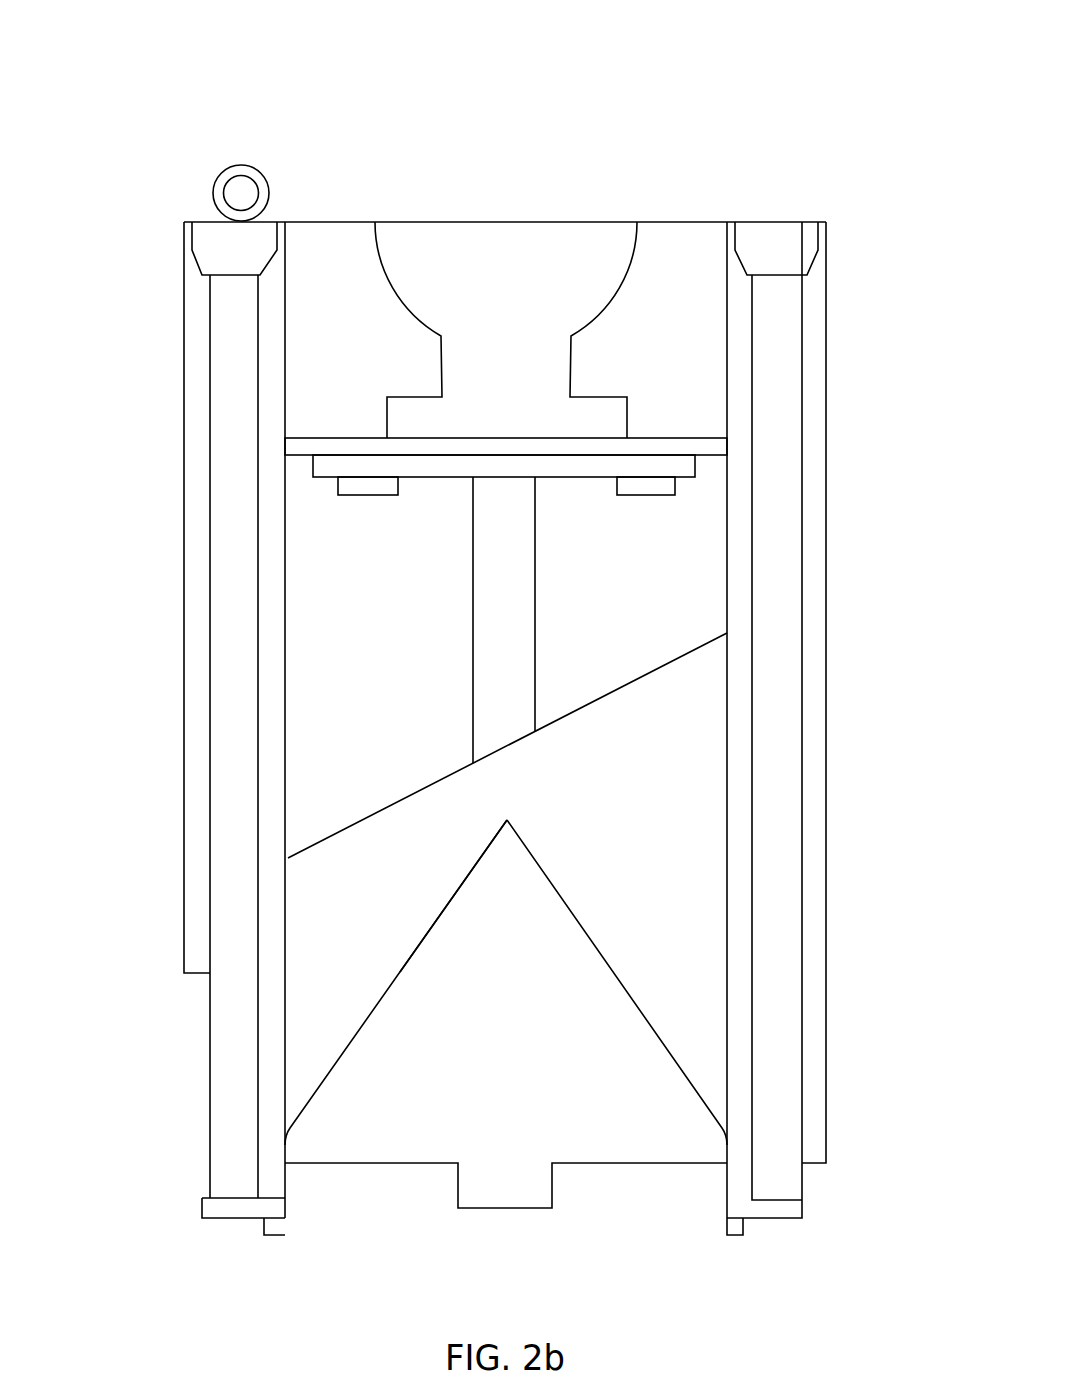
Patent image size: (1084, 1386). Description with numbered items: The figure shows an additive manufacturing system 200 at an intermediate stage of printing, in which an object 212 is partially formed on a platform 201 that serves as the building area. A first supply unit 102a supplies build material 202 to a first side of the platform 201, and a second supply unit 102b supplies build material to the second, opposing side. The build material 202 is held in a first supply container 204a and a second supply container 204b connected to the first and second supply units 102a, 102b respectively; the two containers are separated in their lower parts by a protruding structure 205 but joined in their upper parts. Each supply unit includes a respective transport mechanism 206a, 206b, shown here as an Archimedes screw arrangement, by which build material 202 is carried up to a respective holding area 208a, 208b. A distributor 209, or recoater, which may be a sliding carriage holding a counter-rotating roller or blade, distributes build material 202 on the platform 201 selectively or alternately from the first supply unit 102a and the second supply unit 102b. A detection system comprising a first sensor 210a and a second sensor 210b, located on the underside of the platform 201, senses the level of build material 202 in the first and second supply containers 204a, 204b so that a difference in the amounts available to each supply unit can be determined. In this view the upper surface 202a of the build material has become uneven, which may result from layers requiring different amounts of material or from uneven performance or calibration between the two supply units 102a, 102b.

The additive manufacturing system 200 is at (386, 92).
The first supply unit 102a is at (846, 532).
The second supply unit 102b is at (148, 570).
The distributor 209 is at (233, 165).
The first holding area 208a is at (777, 247).
The second holding area 208b is at (215, 250).
The first transport mechanism 206a is at (773, 743).
The second transport mechanism 206b is at (233, 750).
The first supply container 204a is at (670, 975).
The second supply container 204b is at (302, 985).
The object 212 is at (500, 263).
The platform 201 is at (647, 445).
The first sensor 210a is at (653, 495).
The second sensor 210b is at (367, 495).
The build material 202 is at (530, 801).
The upper surface of the build material 202a is at (588, 705).
The protruding structure 205 is at (427, 932).